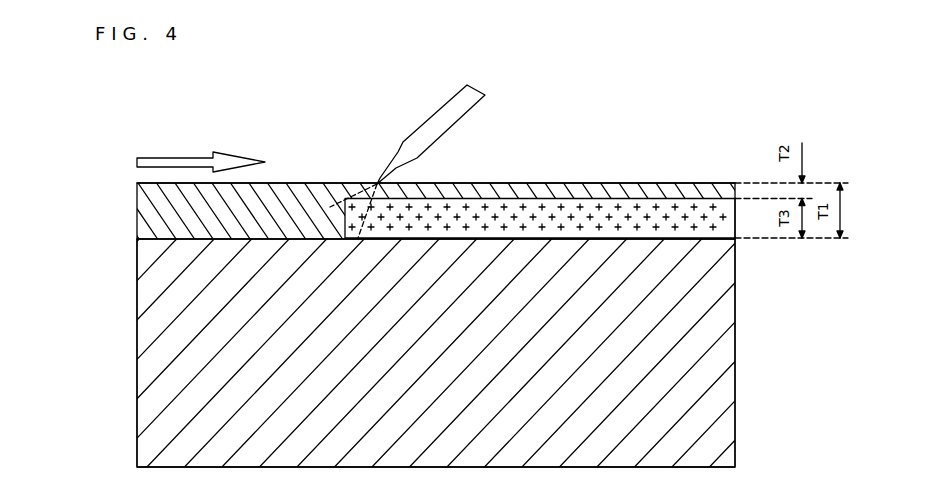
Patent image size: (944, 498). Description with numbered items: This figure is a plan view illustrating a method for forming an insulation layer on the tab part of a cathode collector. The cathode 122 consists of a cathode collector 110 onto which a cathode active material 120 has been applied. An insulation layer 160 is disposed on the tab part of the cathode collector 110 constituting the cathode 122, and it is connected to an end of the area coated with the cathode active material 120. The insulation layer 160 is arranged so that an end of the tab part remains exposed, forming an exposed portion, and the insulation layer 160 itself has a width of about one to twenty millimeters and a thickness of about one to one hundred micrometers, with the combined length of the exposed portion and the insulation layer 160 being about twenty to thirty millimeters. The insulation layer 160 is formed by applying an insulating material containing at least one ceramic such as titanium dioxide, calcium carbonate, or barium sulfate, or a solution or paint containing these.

The cathode collector 110 is at (137, 211).
The cathode active material 120 is at (137, 346).
The cathode 122 is at (76, 209).
The insulation layer 160 is at (722, 227).